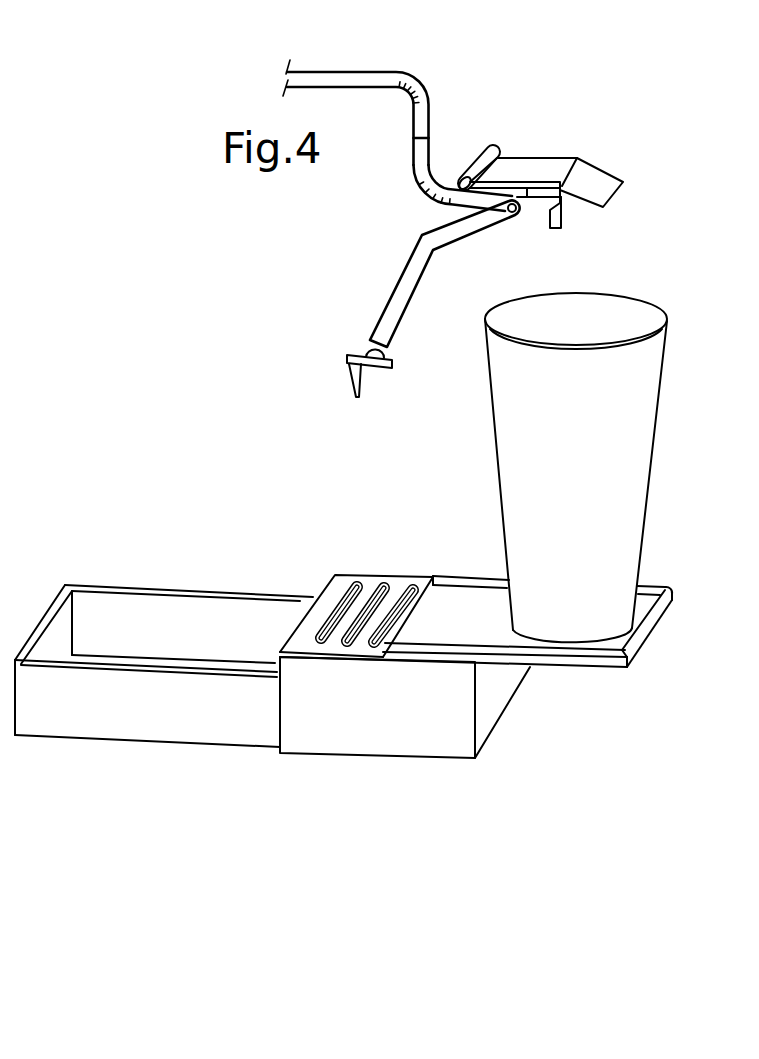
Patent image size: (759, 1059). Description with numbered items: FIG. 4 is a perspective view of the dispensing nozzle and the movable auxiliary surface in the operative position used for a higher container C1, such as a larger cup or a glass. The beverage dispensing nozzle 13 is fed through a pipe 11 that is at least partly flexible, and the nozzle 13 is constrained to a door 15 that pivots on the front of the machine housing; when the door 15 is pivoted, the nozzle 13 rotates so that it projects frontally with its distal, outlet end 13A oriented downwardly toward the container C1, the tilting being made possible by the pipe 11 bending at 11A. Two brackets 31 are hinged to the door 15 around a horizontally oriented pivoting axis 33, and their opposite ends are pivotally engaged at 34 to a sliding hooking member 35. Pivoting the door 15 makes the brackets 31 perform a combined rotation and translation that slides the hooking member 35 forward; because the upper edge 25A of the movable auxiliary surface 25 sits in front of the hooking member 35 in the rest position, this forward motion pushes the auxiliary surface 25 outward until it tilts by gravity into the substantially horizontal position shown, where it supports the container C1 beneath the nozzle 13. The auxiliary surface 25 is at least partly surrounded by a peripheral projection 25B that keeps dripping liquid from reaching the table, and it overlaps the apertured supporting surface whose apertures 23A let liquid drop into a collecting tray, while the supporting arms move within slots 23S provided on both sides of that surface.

The pipe 11 is at (340, 81).
The bend of pipe 11A is at (418, 187).
The door 15 is at (537, 168).
The beverage dispensing nozzle 13 is at (537, 212).
The distal end of the dispensing nozzle 13A is at (557, 233).
The brackets 31 is at (412, 268).
The pivoting axis 33 is at (512, 218).
The pivotal engagement 34 is at (362, 347).
The sliding hooking member 35 is at (352, 380).
The container C1 is at (514, 447).
The movable auxiliary surface 25 is at (457, 608).
The upper edge of the movable auxiliary surface 25A is at (640, 677).
The peripheral projection 25B is at (650, 585).
The apertures 23A is at (358, 617).
The slots 23S is at (347, 580).